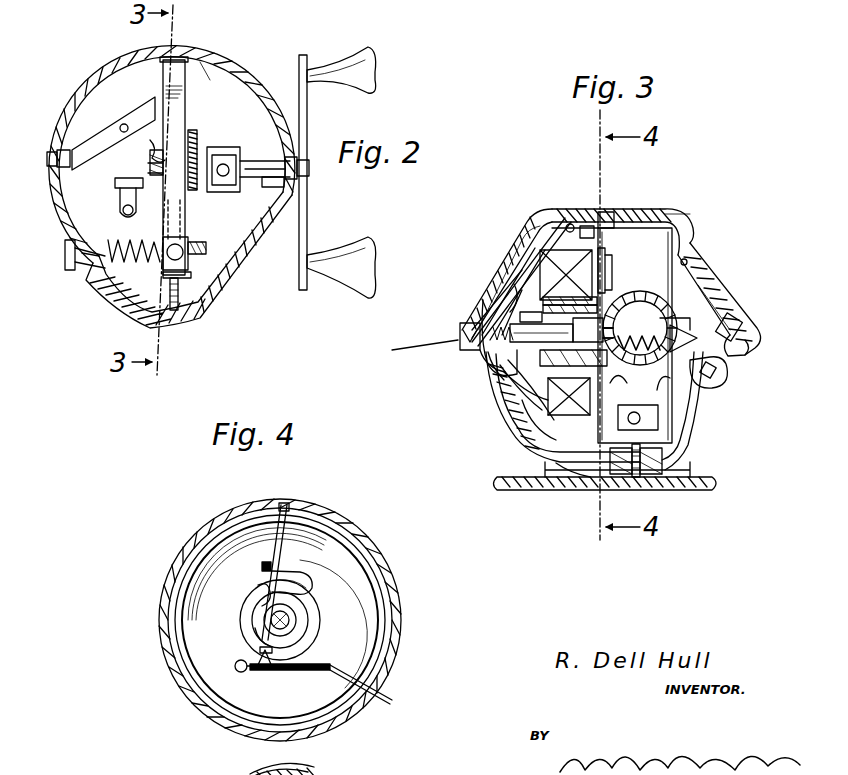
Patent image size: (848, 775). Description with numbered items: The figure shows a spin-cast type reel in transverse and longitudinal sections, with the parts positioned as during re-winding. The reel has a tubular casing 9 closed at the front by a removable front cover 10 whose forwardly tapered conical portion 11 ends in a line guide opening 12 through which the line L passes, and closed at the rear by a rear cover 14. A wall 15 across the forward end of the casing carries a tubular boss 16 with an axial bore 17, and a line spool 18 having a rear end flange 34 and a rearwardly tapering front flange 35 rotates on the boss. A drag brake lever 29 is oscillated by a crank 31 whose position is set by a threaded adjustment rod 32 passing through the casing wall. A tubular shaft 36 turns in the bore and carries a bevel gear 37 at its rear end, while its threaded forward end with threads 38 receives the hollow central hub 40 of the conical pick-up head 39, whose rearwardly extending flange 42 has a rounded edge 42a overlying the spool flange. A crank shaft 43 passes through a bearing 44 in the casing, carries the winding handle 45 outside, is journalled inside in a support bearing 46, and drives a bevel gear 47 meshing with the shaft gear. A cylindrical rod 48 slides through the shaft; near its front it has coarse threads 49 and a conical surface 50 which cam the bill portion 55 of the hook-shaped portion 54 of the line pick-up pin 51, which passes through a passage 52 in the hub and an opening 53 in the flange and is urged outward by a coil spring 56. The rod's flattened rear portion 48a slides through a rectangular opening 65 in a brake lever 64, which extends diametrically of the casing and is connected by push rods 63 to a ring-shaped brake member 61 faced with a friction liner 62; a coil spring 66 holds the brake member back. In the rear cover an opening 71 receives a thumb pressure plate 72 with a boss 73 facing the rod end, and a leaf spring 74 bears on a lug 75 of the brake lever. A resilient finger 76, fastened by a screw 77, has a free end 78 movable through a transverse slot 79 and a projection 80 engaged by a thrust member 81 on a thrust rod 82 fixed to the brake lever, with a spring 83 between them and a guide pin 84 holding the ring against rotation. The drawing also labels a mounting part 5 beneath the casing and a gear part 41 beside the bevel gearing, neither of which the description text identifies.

In FIG. 3, the reel foot 5 is at (718, 484).
In FIG. 4, the reel foot 5 is at (314, 768).
In FIG. 2, the tubular casing 9 is at (85, 85).
In FIG. 3, the tubular casing 9 is at (640, 209).
In FIG. 3, the front cover 10 is at (548, 209).
In FIG. 4, the front cover 10 is at (372, 528).
In FIG. 3, the forwardly tapered conical portion 11 is at (520, 285).
In FIG. 3, the line guide opening 12 is at (458, 345).
In FIG. 3, the rear cover 14 is at (692, 212).
In FIG. 2, the wall 15 is at (208, 65).
In FIG. 3, the wall 15 is at (612, 222).
In FIG. 3, the tubular boss 16 is at (600, 300).
In FIG. 3, the axial bore 17 is at (615, 310).
In FIG. 3, the line spool 18 is at (540, 250).
In FIG. 2, the brake lever 29 is at (190, 226).
In FIG. 2, the crank 31 is at (188, 262).
In FIG. 3, the crank 31 is at (658, 412).
In FIG. 2, the threaded adjustment rod 32 is at (206, 247).
In FIG. 3, the threaded adjustment rod 32 is at (640, 420).
In FIG. 3, the rear end flange 34 is at (606, 252).
In FIG. 3, the front flange 35 is at (522, 225).
In FIG. 3, the tubular shaft 36 is at (532, 258).
In FIG. 4, the tubular shaft 36 is at (298, 622).
In FIG. 2, the bevel gear 37 is at (148, 168).
In FIG. 3, the bevel gear 37 is at (561, 330).
In FIG. 3, the external threads 38 is at (502, 388).
In FIG. 3, the pick-up head 39 is at (522, 428).
In FIG. 4, the pick-up head 39 is at (380, 580).
In FIG. 3, the hollow central hub 40 is at (505, 315).
In FIG. 4, the hollow central hub 40 is at (306, 638).
In FIG. 3, the drive gear 41 is at (648, 312).
In FIG. 3, the rearwardly extending flange 42 is at (545, 458).
In FIG. 4, the rearwardly extending flange 42 is at (312, 508).
In FIG. 3, the rounded inner edge 42a is at (545, 475).
In FIG. 2, the crank shaft 43 is at (255, 162).
In FIG. 2, the bearing 44 is at (278, 190).
In FIG. 2, the winding handle 45 is at (302, 55).
In FIG. 2, the support bearing 46 is at (220, 147).
In FIG. 2, the bevel gear 47 is at (194, 132).
In FIG. 3, the bevel gear 47 is at (608, 333).
In FIG. 3, the cylindrical rod 48 is at (498, 372).
In FIG. 4, the cylindrical rod 48 is at (290, 616).
In FIG. 2, the flattened portion 48a is at (150, 162).
In FIG. 3, the threads 49 is at (488, 362).
In FIG. 3, the conical surface 50 is at (492, 330).
In FIG. 3, the line pick-up pin 51 is at (568, 222).
In FIG. 4, the line pick-up pin 51 is at (280, 540).
In FIG. 3, the passage 52 is at (502, 300).
In FIG. 4, the passage 52 is at (260, 590).
In FIG. 3, the opening 53 is at (555, 216).
In FIG. 4, the opening 53 is at (284, 503).
In FIG. 3, the hook-shaped portion 54 is at (480, 358).
In FIG. 4, the hook-shaped portion 54 is at (262, 645).
In FIG. 4, the bill portion 55 is at (305, 648).
In FIG. 3, the coil spring 56 is at (512, 285).
In FIG. 4, the coil spring 56 is at (306, 575).
In FIG. 3, the brake member 61 is at (600, 210).
In FIG. 3, the liner 62 is at (582, 226).
In FIG. 2, the push rods 63 is at (200, 50).
In FIG. 3, the push rods 63 is at (660, 209).
In FIG. 2, the brake lever 64 is at (160, 80).
In FIG. 3, the brake lever 64 is at (695, 222).
In FIG. 2, the rectangular opening 65 is at (165, 158).
In FIG. 3, the coil spring 66 is at (665, 318).
In FIG. 3, the opening 71 is at (705, 250).
In FIG. 3, the thumb pressure plate 72 is at (712, 282).
In FIG. 3, the boss 73 is at (748, 343).
In FIG. 3, the leaf spring 74 is at (728, 318).
In FIG. 3, the lug 75 is at (722, 385).
In FIG. 4, the resilient finger 76 is at (306, 670).
In FIG. 4, the screw 77 is at (241, 672).
In FIG. 4, the free end 78 is at (362, 686).
In FIG. 3, the transverse slot 79 is at (516, 403).
In FIG. 4, the transverse slot 79 is at (266, 670).
In FIG. 3, the projection 80 is at (502, 418).
In FIG. 4, the projection 80 is at (258, 656).
In FIG. 3, the thrust member 81 is at (507, 398).
In FIG. 2, the thrust rod 82 is at (115, 195).
In FIG. 3, the thrust rod 82 is at (622, 383).
In FIG. 3, the spring 83 is at (670, 385).
In FIG. 3, the guide pin 84 is at (612, 270).
In FIG. 3, the line L is at (412, 345).